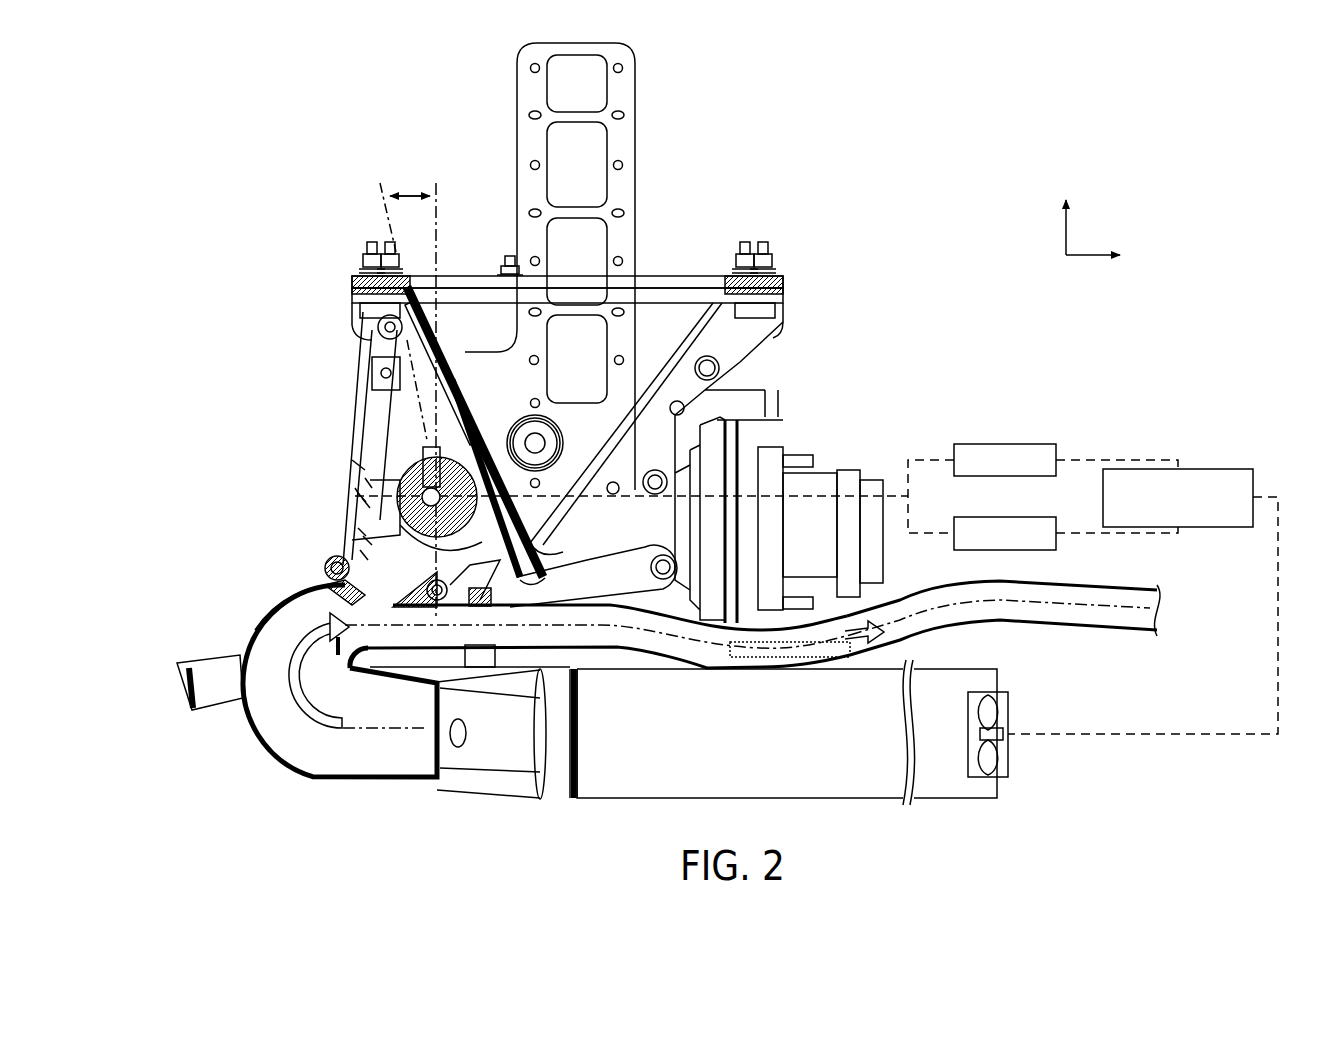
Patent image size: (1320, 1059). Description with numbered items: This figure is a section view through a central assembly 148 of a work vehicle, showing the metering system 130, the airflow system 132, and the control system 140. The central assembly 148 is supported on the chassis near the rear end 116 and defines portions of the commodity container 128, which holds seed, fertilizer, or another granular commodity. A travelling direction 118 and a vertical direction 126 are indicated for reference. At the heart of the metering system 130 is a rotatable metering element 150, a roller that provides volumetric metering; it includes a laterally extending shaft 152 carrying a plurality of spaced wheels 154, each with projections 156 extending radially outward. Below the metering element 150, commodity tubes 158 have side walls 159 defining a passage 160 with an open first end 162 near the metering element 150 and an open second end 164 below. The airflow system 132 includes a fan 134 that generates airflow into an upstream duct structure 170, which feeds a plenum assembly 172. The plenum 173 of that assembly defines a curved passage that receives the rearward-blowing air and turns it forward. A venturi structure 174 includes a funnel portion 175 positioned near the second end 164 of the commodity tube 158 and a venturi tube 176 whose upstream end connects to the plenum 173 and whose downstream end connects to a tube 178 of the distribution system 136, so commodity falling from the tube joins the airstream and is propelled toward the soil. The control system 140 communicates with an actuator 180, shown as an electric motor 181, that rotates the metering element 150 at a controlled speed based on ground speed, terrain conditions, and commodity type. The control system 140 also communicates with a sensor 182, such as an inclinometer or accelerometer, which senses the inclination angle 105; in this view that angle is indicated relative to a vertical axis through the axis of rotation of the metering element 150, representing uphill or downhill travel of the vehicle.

The inclination angle 105 is at (417, 192).
The rear end 116 is at (177, 668).
The travelling direction 118 is at (1090, 257).
The vertical direction 126 is at (1063, 232).
The commodity container 128 is at (685, 328).
The metering system 130 is at (409, 453).
The airflow system 132 is at (267, 769).
The fan 134 is at (1006, 712).
The distribution system 136 is at (1118, 579).
The control system 140 is at (1221, 449).
The central assembly 148 is at (331, 185).
The metering element 150 is at (352, 465).
The shaft 152 is at (362, 503).
The wheels 154 is at (365, 540).
The projections 156 is at (461, 300).
The commodity tubes 158 is at (356, 492).
The side walls 159 is at (360, 532).
The passage 160 is at (365, 482).
The first end 162 is at (360, 497).
The second end 164 is at (362, 555).
The upstream duct structure 170 is at (742, 800).
The plenum assembly 172 is at (238, 736).
The plenum 173 is at (265, 628).
The venturi structure 174 is at (327, 580).
The funnel portion 175 is at (330, 563).
The venturi tube 176 is at (336, 647).
The tube 178 is at (903, 608).
The actuator 180 is at (982, 427).
The electric motor 181 is at (1008, 444).
The sensor 182 is at (1008, 517).